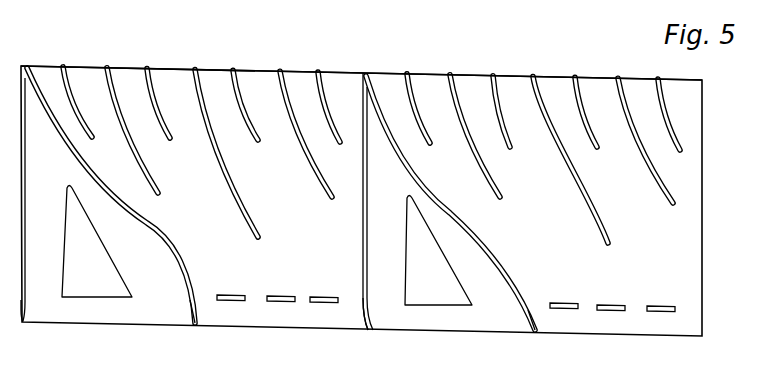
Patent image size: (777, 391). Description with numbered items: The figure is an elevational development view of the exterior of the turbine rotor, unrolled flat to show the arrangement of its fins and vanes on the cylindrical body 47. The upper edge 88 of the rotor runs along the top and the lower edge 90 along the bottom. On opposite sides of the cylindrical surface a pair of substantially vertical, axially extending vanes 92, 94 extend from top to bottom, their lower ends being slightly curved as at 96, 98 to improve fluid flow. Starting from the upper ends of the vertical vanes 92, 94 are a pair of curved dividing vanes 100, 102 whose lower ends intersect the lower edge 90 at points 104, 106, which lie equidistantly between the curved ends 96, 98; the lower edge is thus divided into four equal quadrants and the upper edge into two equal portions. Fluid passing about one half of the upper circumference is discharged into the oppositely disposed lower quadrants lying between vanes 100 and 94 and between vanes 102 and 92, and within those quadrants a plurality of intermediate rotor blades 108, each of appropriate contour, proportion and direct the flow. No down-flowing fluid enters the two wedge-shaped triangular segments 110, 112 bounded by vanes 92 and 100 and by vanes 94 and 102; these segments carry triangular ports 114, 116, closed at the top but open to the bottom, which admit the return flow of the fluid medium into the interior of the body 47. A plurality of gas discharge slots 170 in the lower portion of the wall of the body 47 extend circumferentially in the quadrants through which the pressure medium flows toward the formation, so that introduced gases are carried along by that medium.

The cylindrical body 47 is at (343, 88).
The upper edge 88 is at (489, 77).
The lower edge 90 is at (330, 345).
The vertical vane 92 is at (26, 205).
The vertical vane 94 is at (368, 207).
The curved lower end 96 is at (25, 298).
The curved lower end 98 is at (365, 302).
The curved dividing vane 100 is at (147, 223).
The curved dividing vane 102 is at (473, 235).
The intersection point 104 is at (193, 327).
The intersection point 106 is at (534, 333).
The intermediate rotor blades 108 is at (118, 103).
The triangular segment 110 is at (150, 305).
The triangular segment 112 is at (490, 317).
The triangular port 114 is at (76, 296).
The triangular port 116 is at (423, 305).
The gas discharge slots 170 is at (315, 303).